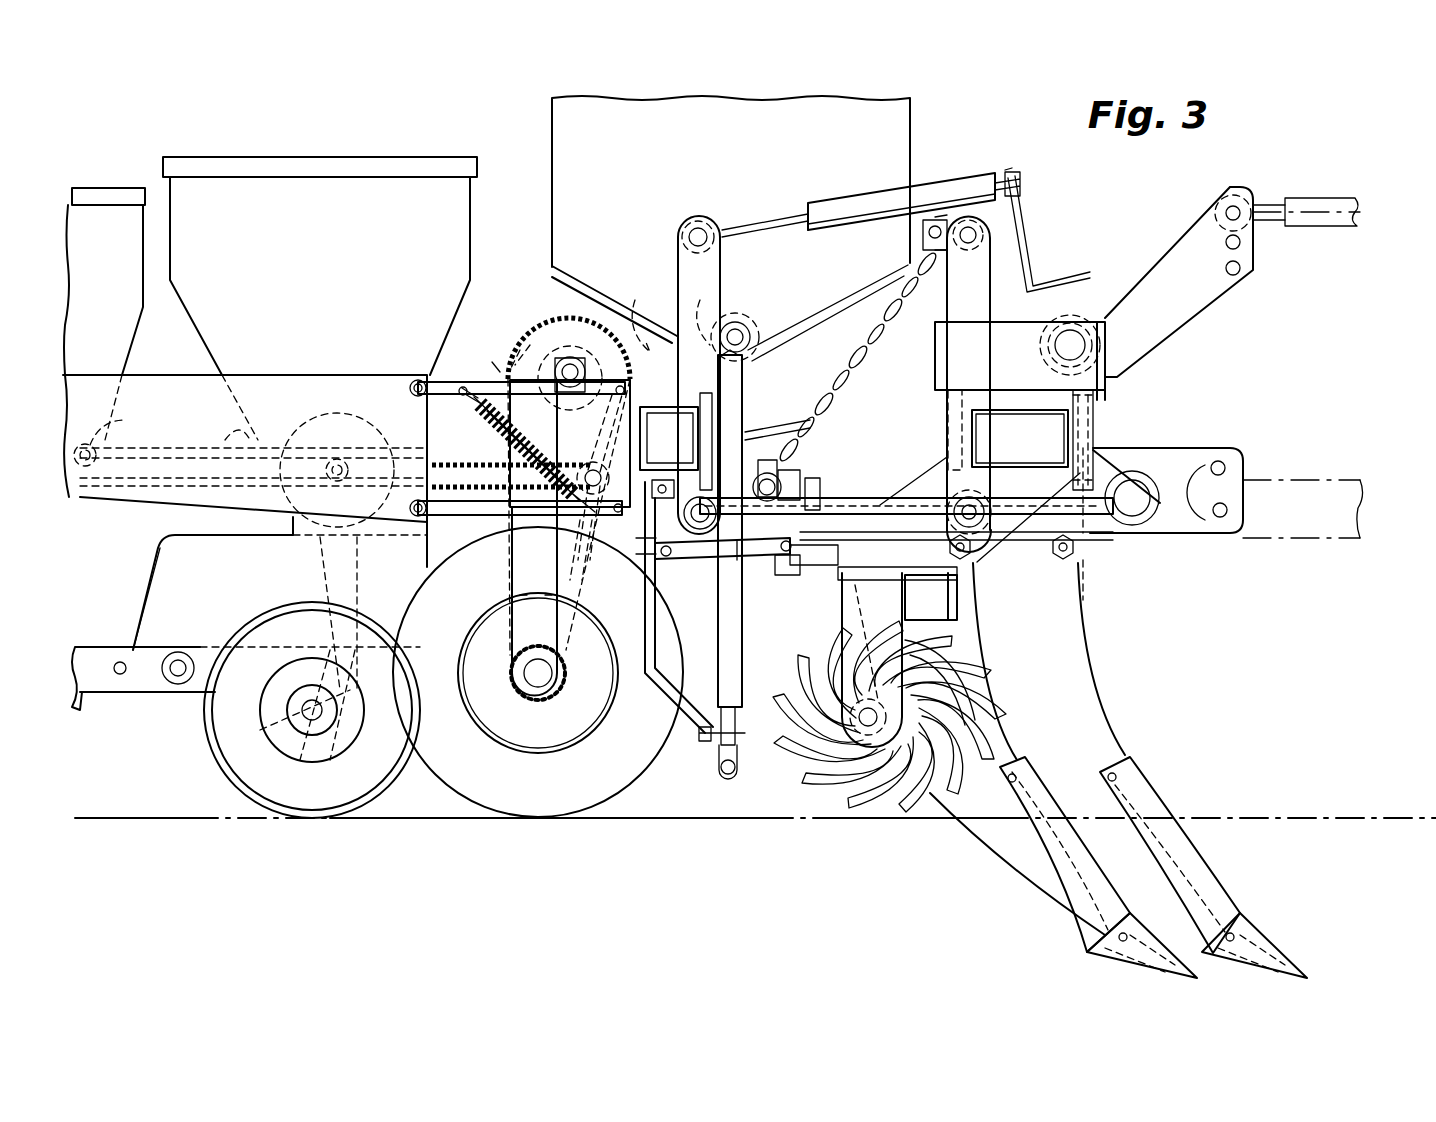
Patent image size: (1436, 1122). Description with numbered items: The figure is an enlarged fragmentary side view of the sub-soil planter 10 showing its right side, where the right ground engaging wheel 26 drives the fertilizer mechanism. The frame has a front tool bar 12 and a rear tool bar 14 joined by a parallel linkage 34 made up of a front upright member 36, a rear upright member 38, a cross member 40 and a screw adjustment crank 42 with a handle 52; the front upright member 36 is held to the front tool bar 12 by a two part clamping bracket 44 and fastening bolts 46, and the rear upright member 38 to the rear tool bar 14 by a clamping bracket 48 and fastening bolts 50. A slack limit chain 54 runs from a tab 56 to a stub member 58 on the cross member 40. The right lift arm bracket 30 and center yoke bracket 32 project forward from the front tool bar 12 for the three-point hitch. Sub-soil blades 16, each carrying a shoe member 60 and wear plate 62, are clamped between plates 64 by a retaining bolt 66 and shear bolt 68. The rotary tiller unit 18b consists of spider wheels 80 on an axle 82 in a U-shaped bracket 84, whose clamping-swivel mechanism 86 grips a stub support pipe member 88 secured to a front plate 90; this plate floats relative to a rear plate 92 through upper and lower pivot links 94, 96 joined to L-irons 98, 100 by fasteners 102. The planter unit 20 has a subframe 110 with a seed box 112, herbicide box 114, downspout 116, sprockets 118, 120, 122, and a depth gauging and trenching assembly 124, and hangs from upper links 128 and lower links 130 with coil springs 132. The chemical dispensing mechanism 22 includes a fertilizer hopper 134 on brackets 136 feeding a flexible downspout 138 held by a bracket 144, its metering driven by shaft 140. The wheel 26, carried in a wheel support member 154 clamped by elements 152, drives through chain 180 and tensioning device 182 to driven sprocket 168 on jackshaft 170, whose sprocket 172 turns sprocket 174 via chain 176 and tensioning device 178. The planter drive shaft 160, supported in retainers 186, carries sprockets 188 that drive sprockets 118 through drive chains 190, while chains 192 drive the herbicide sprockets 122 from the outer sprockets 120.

The sub-soil planter 10 is at (1288, 165).
The front tool bar 12 is at (1045, 460).
The rear tool bar 14 is at (712, 445).
The sub-soil blades 16 is at (985, 630).
The right rotary tiller unit 18b is at (1025, 693).
The planter unit 20 is at (132, 541).
The chemical dispensing mechanism 22 is at (542, 137).
The right ground engaging wheel 26 is at (640, 780).
The right lift arm bracket 30 is at (1213, 445).
The center yoke bracket 32 is at (1200, 218).
The parallel linkage 34 is at (952, 166).
The front upright member 36 is at (992, 308).
The rear upright member 38 is at (672, 275).
The cross member 40 is at (828, 506).
The screw adjustment crank 42 is at (835, 240).
The two part clamping bracket 44 is at (955, 432).
The fastening bolts 46 is at (1100, 407).
The two part clamping bracket 48 is at (600, 432).
The fastening bolts 50 is at (722, 412).
The handle 52 is at (1075, 278).
The limit chain 54 is at (880, 362).
The tab 56 is at (915, 232).
The stub member 58 is at (805, 478).
The shovel or shoe member 60 is at (1085, 942).
The wear plate 62 is at (1042, 778).
The spaced apart plates 64 is at (999, 516).
The retaining bolt 66 is at (970, 562).
The shear bolt 68 is at (1070, 560).
The spider wheels 80 is at (1010, 725).
The axle 82 is at (860, 695).
The U-shaped bracket 84 is at (958, 615).
The clamping-swivel mechanism 86 is at (980, 504).
The stub support pipe member 88 is at (835, 590).
The front plate 90 is at (815, 490).
The rear plate 92 is at (640, 575).
The upper pivot link 94 is at (742, 528).
The lower pivot link 96 is at (740, 558).
The front L-irons 98 is at (795, 560).
The rear L-irons 100 is at (665, 562).
The fasteners 102 is at (718, 573).
The subframe structure 110 is at (245, 532).
The seed box 112 is at (291, 298).
The insecticide or herbicide box 114 is at (106, 268).
The downspout 116 is at (330, 575).
The inner drive sprocket 118 is at (345, 468).
The outer drive sprocket 120 is at (335, 455).
The drive sprocket 122 is at (105, 425).
The depth gauging and trenching assembly 124 is at (193, 763).
The upper links 128 is at (442, 380).
The lower links 130 is at (480, 512).
The coil springs 132 is at (570, 443).
The fertilizer hoppers 134 is at (731, 181).
The brackets 136 is at (552, 272).
The flexible downspouts 138 is at (738, 680).
The shaft 140 is at (768, 360).
The bracket 144 is at (672, 695).
The clamping elements 152 is at (492, 367).
The wheel support member 154 is at (525, 582).
The planter drive shaft 160 is at (669, 438).
The driven sprocket 168 is at (530, 345).
The jackshaft 170 is at (520, 350).
The sprocket 172 is at (600, 345).
The sprocket 174 is at (748, 325).
The chain 176 is at (720, 296).
The tensioning device 178 is at (552, 383).
The chain 180 is at (545, 320).
The tensioning device 182 is at (492, 453).
The retainers 186 is at (669, 438).
The sprockets 188 is at (579, 465).
The drive chains 190 is at (435, 438).
The chains 192 is at (238, 438).